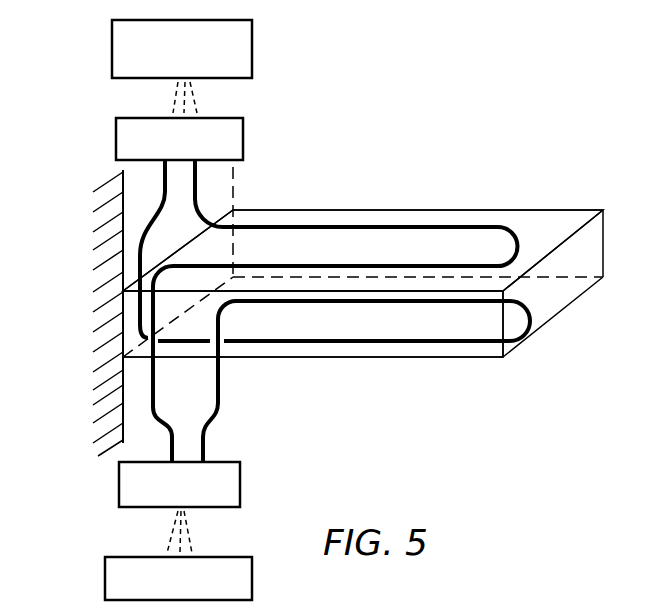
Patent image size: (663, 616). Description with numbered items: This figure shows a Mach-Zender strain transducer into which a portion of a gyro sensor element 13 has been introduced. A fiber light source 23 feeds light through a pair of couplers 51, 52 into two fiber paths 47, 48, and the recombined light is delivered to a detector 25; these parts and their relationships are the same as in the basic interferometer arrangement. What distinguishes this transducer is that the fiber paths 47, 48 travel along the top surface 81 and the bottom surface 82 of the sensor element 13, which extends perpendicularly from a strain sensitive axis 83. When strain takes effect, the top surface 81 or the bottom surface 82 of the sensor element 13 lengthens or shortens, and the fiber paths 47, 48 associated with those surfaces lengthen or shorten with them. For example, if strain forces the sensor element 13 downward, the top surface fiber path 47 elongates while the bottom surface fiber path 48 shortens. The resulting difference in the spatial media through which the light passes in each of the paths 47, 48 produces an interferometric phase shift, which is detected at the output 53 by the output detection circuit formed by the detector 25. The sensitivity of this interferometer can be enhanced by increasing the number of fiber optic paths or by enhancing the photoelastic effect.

The gyro sensor element 13 is at (592, 248).
The fiber light source 23 is at (252, 52).
The detector 25 is at (103, 560).
The fiber path 47 is at (277, 226).
The fiber path 48 is at (150, 226).
The coupler 51 is at (243, 137).
The coupler 52 is at (240, 490).
The output 53 is at (190, 528).
The top surface 81 is at (562, 217).
The bottom surface 82 is at (548, 307).
The strain sensitive axis 83 is at (137, 380).